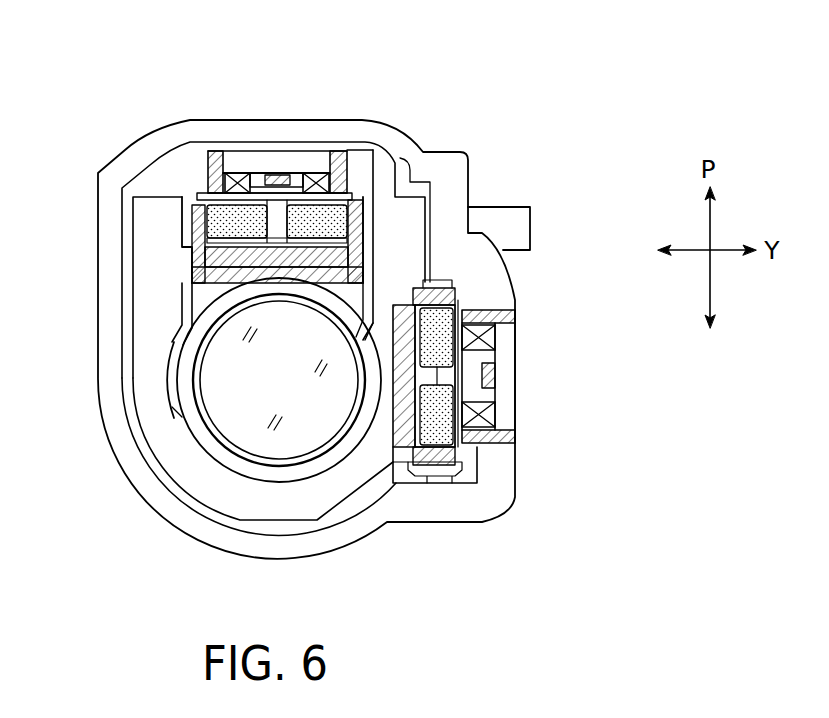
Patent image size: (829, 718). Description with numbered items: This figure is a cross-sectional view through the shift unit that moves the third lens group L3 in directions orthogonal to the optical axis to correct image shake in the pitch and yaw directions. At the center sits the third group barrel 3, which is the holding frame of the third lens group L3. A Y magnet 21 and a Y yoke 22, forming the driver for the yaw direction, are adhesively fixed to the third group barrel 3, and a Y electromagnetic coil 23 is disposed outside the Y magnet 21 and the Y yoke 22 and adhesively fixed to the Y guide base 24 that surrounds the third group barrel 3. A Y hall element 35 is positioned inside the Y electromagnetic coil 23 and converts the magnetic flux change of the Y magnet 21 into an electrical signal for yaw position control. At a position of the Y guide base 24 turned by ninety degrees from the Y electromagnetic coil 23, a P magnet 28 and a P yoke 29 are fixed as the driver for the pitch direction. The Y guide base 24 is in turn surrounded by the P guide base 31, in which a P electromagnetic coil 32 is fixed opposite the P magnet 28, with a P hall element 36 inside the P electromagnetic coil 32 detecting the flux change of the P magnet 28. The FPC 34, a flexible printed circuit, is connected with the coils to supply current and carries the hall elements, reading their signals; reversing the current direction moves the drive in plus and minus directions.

The Y guide base 24 is at (172, 182).
The Y electromagnetic coil 23 is at (222, 185).
The Y hall element 35 is at (269, 177).
The FPC 34 is at (296, 178).
The P guide base 31 is at (452, 160).
The Y magnet 21 is at (222, 217).
The Y yoke 22 is at (215, 257).
The third group barrel 3 is at (187, 378).
The third lens group L3 is at (232, 408).
The P hall element 36 is at (490, 377).
The P electromagnetic coil 32 is at (483, 416).
The P yoke 29 is at (398, 452).
The P magnet 28 is at (450, 465).